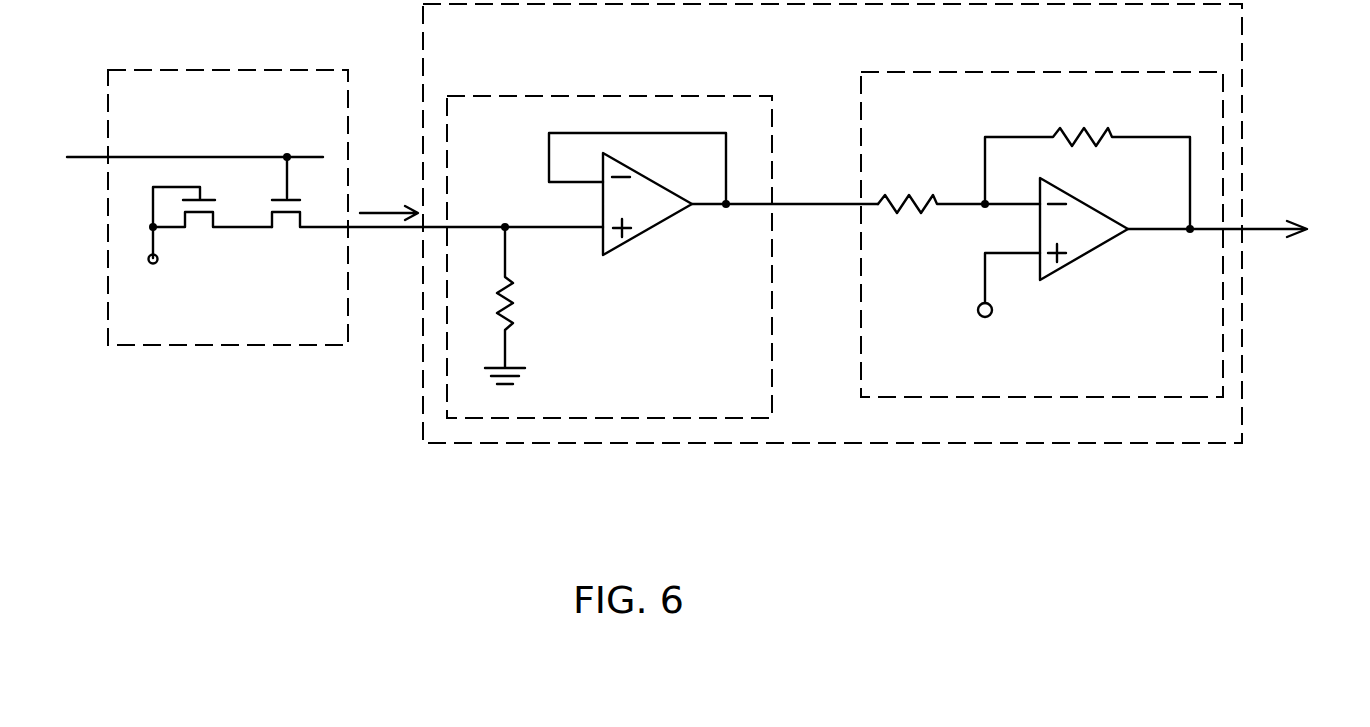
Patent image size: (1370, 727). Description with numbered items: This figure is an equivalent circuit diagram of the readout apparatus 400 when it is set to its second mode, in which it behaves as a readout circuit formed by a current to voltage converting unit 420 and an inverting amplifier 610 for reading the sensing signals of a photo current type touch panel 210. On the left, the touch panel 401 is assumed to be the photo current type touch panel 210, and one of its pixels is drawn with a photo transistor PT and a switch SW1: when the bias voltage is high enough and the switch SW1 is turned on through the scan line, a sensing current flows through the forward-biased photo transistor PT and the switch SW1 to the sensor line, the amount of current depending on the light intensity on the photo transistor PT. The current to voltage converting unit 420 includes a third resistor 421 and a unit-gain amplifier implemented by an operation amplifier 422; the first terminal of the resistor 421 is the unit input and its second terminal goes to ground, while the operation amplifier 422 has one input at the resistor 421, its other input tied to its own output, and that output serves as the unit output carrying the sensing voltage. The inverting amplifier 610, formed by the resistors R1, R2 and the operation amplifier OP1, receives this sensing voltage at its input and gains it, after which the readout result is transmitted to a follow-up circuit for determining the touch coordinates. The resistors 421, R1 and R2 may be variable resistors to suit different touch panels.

The readout apparatus 400 is at (1243, 85).
The photo current type touch panel 210 is at (286, 272).
The touch panel 401 is at (286, 272).
The current to voltage converting unit 420 is at (530, 96).
The third resistor 421 is at (513, 298).
The operation amplifier 422 is at (647, 233).
The inverting amplifier 610 is at (965, 72).
The photo transistor PT is at (197, 223).
The switch SW1 is at (386, 244).
The resistor R1 is at (908, 190).
The resistor R2 is at (1087, 130).
The operation amplifier OP1 is at (1083, 258).